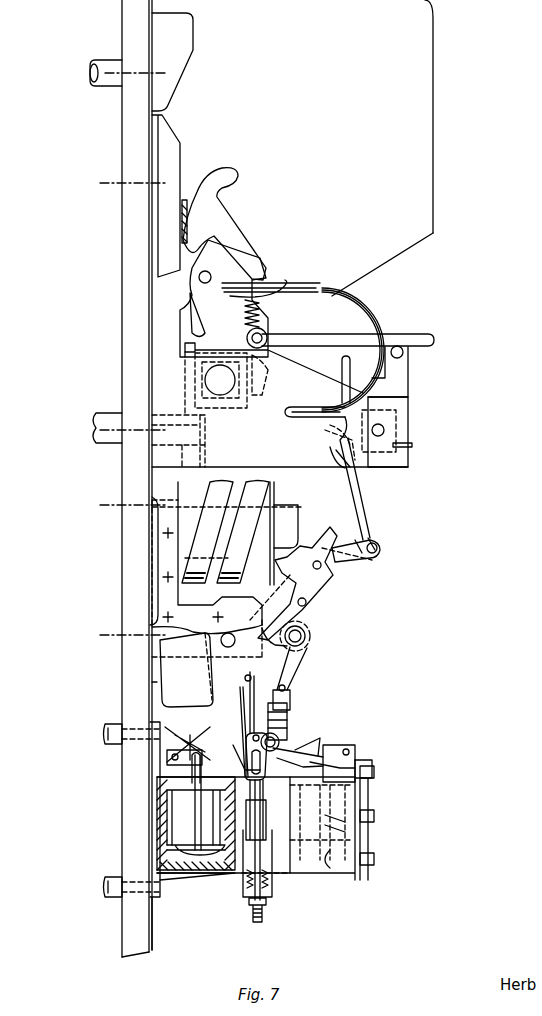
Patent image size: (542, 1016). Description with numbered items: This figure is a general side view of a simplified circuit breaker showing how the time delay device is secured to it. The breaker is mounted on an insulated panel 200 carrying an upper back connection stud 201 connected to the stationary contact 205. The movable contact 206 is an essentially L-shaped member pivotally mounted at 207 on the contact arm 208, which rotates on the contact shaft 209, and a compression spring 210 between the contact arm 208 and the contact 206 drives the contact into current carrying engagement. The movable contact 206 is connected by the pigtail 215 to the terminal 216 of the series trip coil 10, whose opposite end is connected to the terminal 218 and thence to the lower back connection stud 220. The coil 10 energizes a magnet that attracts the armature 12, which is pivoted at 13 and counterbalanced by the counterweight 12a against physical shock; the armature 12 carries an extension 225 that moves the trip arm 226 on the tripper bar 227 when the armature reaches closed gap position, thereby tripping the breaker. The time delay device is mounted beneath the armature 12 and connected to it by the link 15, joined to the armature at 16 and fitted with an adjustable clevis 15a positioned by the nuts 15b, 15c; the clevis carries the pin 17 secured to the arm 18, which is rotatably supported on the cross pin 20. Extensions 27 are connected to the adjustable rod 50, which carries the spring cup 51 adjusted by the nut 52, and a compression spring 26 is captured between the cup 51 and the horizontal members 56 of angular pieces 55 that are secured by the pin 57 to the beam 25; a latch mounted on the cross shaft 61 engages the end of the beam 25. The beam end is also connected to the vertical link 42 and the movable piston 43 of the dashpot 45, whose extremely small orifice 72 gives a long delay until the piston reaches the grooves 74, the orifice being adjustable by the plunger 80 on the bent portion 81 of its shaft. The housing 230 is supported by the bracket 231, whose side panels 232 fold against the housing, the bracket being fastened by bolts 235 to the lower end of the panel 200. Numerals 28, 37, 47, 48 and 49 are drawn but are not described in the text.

The insulated panel 200 is at (130, 379).
The upper back connection stud 201 is at (113, 62).
The stationary contact 205 is at (182, 212).
The movable contact 206 is at (200, 203).
The pivot 207 is at (213, 274).
The contact arm 208 is at (250, 283).
The contact shaft 209 is at (213, 377).
The compression spring 210 is at (355, 297).
The pigtail 215 is at (380, 330).
The terminal 216 is at (382, 432).
The terminal 218 is at (168, 438).
The lower back connection stud 220 is at (92, 435).
The extension 225 is at (385, 553).
The trip arm 226 is at (365, 492).
The tripper bar 227 is at (400, 462).
The series trip coil 10 is at (250, 505).
The armature 12 is at (322, 582).
The counterweight 12a is at (210, 691).
The pivot 13 is at (235, 641).
The link 15 is at (296, 668).
The adjustable clevis 15a is at (292, 716).
The nut 15b is at (291, 692).
The nut 15c is at (289, 706).
The connection 16 is at (305, 635).
The pin 17 is at (258, 732).
The arm 18 is at (306, 745).
The cross pin 20 is at (352, 746).
The beam 25 is at (280, 740).
The compression spring 26 is at (250, 890).
The extensions 27 is at (241, 729).
The lever 28 is at (322, 752).
The spring 37 is at (172, 730).
The vertical link 42 is at (323, 803).
The movable piston 43 is at (360, 860).
The dashpot 45 is at (350, 848).
The solenoid coil 47 is at (165, 800).
The plunger 48 is at (168, 823).
The base 49 is at (165, 858).
The adjustable rod 50 is at (308, 868).
The spring cup 51 is at (270, 882).
The nut 52 is at (263, 905).
The angular pieces 55 is at (240, 745).
The horizontal members 56 is at (236, 768).
The pin 57 is at (252, 684).
The cross shaft 61 is at (362, 762).
The orifice 72 is at (335, 868).
The grooves 74 is at (390, 820).
The plunger 80 is at (336, 833).
The bent portion 81 is at (372, 772).
The housing 230 is at (175, 885).
The bracket 231 is at (150, 770).
The side panels 232 is at (165, 900).
The bolts 235 is at (112, 738).